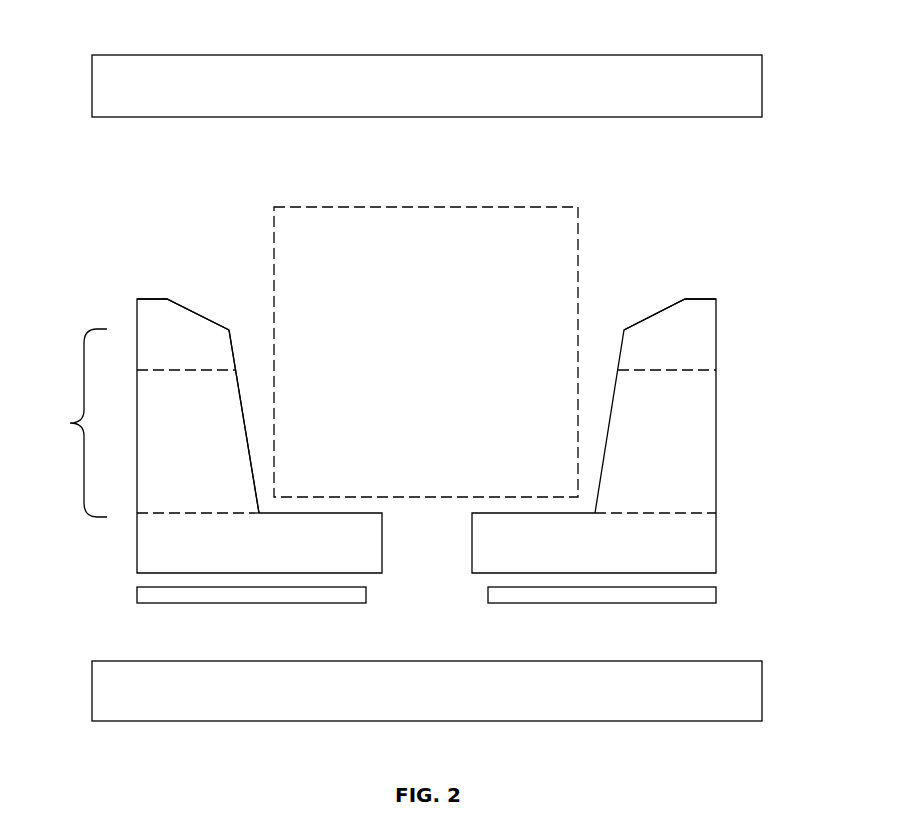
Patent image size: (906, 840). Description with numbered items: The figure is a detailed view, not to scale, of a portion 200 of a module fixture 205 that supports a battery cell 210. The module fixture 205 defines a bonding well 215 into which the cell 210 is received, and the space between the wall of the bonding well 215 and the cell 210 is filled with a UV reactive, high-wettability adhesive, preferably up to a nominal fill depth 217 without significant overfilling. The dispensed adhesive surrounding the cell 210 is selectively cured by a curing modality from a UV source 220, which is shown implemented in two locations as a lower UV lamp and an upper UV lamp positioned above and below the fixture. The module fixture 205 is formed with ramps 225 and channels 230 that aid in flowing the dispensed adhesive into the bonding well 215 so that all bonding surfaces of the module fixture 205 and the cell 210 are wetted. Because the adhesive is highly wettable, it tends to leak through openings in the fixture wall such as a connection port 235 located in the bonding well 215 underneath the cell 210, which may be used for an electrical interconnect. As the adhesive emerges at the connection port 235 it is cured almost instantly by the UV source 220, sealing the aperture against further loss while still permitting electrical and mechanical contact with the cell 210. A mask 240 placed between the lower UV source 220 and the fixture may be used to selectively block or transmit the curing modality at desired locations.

The portion of module fixture 200 is at (689, 34).
The module fixture 205 is at (156, 299).
The battery cell 210 is at (444, 362).
The bonding well 215 is at (257, 341).
The nominal fill depth 217 is at (71, 423).
The UV source 220 is at (137, 117).
The ramp 225 is at (658, 312).
The channel 230 is at (178, 459).
The connection port 235 is at (413, 561).
The mask 240 is at (182, 603).